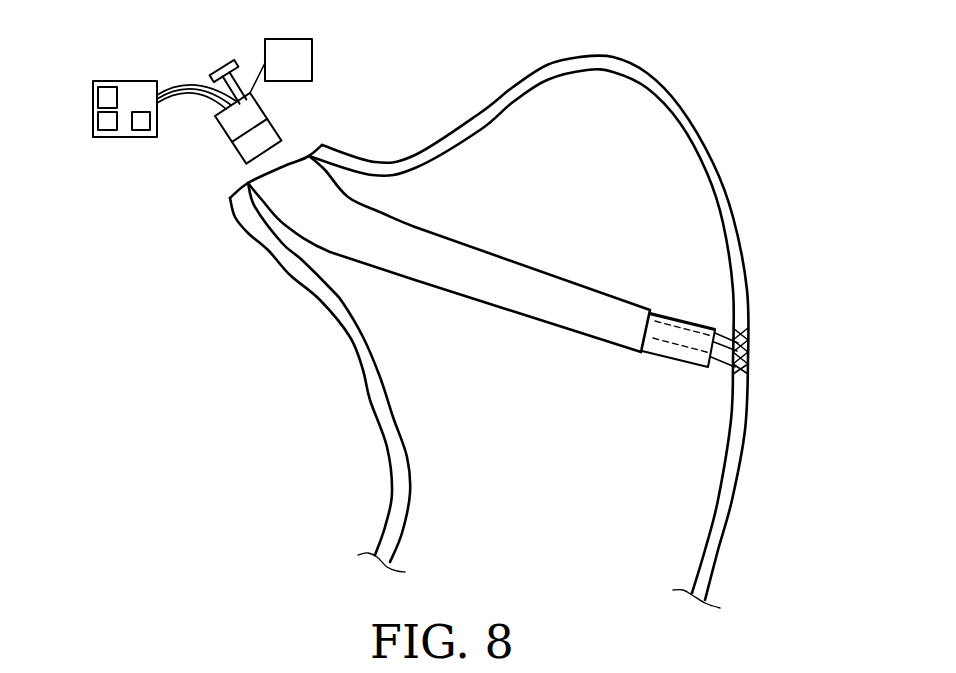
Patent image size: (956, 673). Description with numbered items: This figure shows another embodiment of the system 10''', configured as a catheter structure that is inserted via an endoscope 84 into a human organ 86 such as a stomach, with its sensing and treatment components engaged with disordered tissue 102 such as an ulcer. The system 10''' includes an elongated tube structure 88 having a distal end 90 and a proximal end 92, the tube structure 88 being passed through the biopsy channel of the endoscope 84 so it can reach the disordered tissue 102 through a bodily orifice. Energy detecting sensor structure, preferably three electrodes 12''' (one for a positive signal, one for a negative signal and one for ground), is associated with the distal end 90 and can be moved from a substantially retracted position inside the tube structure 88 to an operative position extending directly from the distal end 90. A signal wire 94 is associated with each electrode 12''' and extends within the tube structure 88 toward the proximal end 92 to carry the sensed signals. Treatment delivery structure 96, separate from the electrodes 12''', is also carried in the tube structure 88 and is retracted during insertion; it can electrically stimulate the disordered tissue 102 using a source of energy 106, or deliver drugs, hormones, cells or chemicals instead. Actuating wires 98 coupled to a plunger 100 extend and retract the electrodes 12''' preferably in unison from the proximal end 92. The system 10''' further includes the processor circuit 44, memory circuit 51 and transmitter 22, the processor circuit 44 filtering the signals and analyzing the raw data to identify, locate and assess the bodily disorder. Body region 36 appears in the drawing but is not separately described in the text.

The transmitter 22 is at (138, 133).
The processor circuit 44 is at (107, 87).
The memory circuit 51 is at (97, 123).
The signal wire 94 is at (180, 88).
The plunger 100 is at (218, 62).
The proximal end 92 is at (222, 133).
The source of energy 106 is at (313, 60).
The endoscope 84 is at (483, 250).
The body 36 is at (724, 237).
The human organ 86 is at (722, 556).
The wires 98 is at (657, 318).
The distal end 90 is at (681, 320).
The elongated tube structure 88 is at (666, 369).
The treatment delivery structure 96 is at (742, 372).
The disordered tissue 102 is at (754, 346).
The electrodes 12''' is at (755, 377).
The system 10''' is at (604, 471).